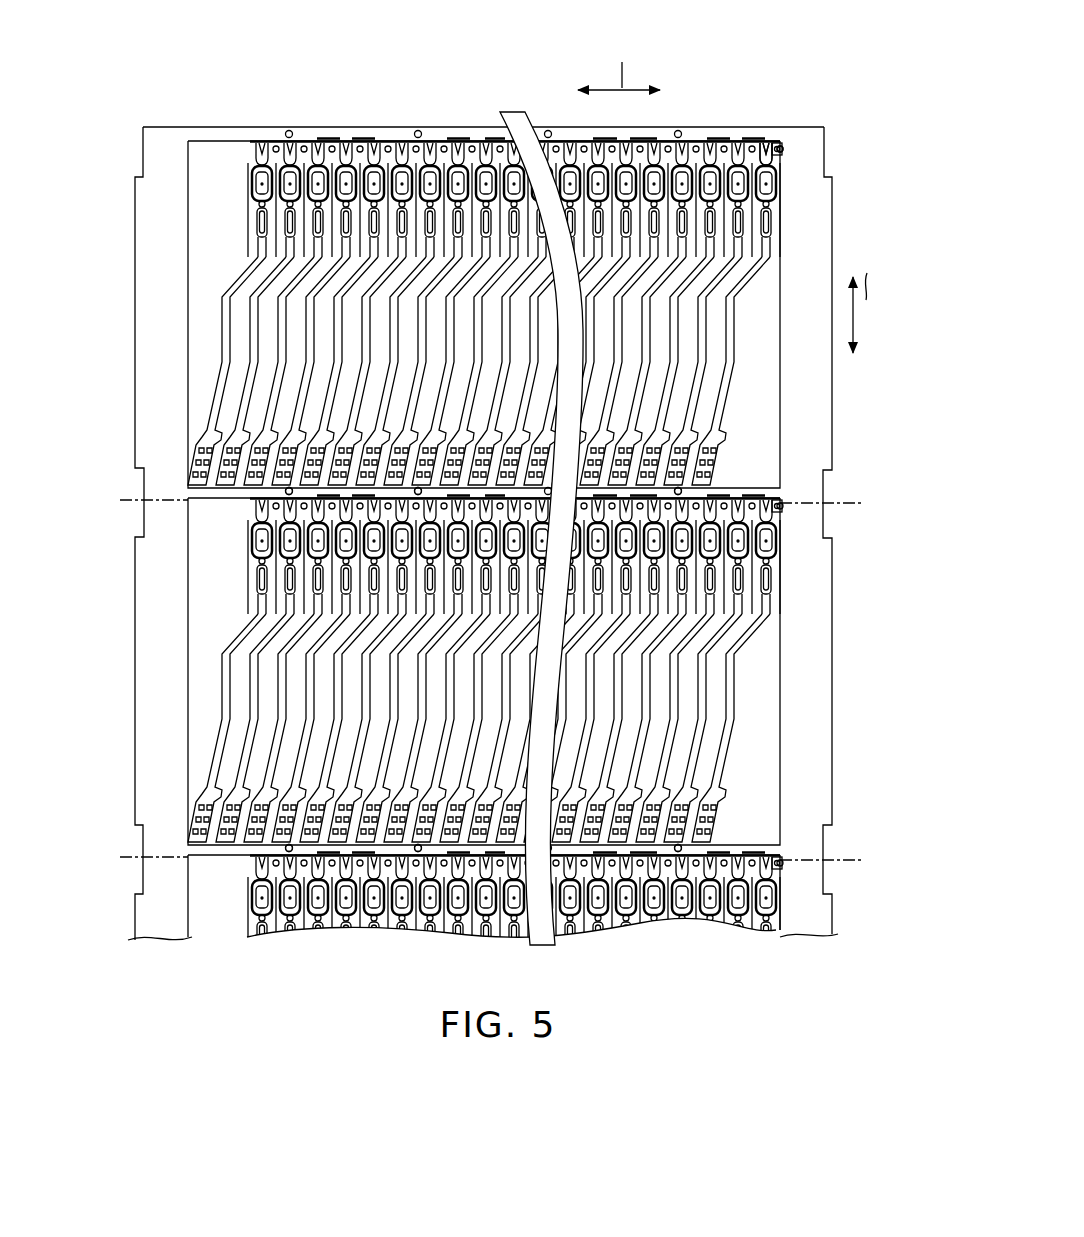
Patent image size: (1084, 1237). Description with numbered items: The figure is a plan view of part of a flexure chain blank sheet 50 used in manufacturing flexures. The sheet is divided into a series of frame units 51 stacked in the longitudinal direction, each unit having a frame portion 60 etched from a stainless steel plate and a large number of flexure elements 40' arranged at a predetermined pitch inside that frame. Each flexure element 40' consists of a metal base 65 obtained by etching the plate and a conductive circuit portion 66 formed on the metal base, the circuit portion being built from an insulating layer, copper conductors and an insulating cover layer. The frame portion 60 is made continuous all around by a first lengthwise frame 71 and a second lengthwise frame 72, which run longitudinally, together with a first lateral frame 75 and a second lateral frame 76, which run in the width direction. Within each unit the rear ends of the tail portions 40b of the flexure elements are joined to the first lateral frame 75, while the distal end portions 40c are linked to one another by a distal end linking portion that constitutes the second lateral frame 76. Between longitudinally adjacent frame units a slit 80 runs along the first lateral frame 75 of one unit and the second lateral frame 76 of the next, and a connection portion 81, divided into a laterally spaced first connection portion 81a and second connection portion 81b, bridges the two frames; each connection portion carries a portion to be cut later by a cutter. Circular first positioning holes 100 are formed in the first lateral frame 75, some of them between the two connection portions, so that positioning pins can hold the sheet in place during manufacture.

The flexure chain blank sheet 50 is at (396, 76).
The frame portion 60 is at (226, 124).
The second lengthwise frame 72 is at (138, 248).
The first lengthwise frame 71 is at (826, 225).
The frame unit 51 is at (132, 407).
The metal base 65 is at (222, 351).
The conductive circuit portion 66 is at (252, 186).
The first lateral frame 75 is at (721, 131).
The second lateral frame 76 is at (786, 148).
The slit 80 is at (748, 495).
The flexure element 40' is at (483, 527).
The tail portion 40b is at (732, 385).
The distal end portion 40c is at (760, 142).
The connection portion 81 is at (625, 494).
The first connection portion 81a is at (343, 490).
The second connection portion 81b is at (513, 494).
The first positioning hole 100 is at (416, 487).